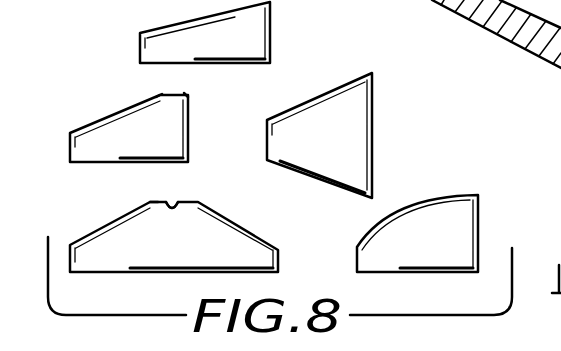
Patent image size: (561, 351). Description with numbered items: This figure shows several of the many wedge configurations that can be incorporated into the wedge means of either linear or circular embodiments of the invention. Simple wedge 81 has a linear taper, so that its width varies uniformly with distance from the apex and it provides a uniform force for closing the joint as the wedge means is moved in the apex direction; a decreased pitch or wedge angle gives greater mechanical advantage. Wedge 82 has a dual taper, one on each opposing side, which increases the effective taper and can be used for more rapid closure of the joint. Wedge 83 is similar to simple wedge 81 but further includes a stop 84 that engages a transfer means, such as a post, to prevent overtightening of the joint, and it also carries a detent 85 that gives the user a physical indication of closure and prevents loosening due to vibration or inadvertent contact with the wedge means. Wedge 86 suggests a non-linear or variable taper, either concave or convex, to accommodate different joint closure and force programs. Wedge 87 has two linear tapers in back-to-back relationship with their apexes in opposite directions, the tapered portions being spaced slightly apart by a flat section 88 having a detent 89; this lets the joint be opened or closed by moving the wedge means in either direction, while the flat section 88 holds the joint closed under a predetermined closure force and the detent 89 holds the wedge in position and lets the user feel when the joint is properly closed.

The simple wedge 81 is at (232, 50).
The wedge 82 is at (312, 151).
The wedge 83 is at (157, 151).
The stop 84 is at (186, 94).
The detent 85 is at (158, 96).
The wedge 86 is at (422, 250).
The wedge 87 is at (160, 250).
The flat section 88 is at (156, 202).
The detent 89 is at (172, 206).